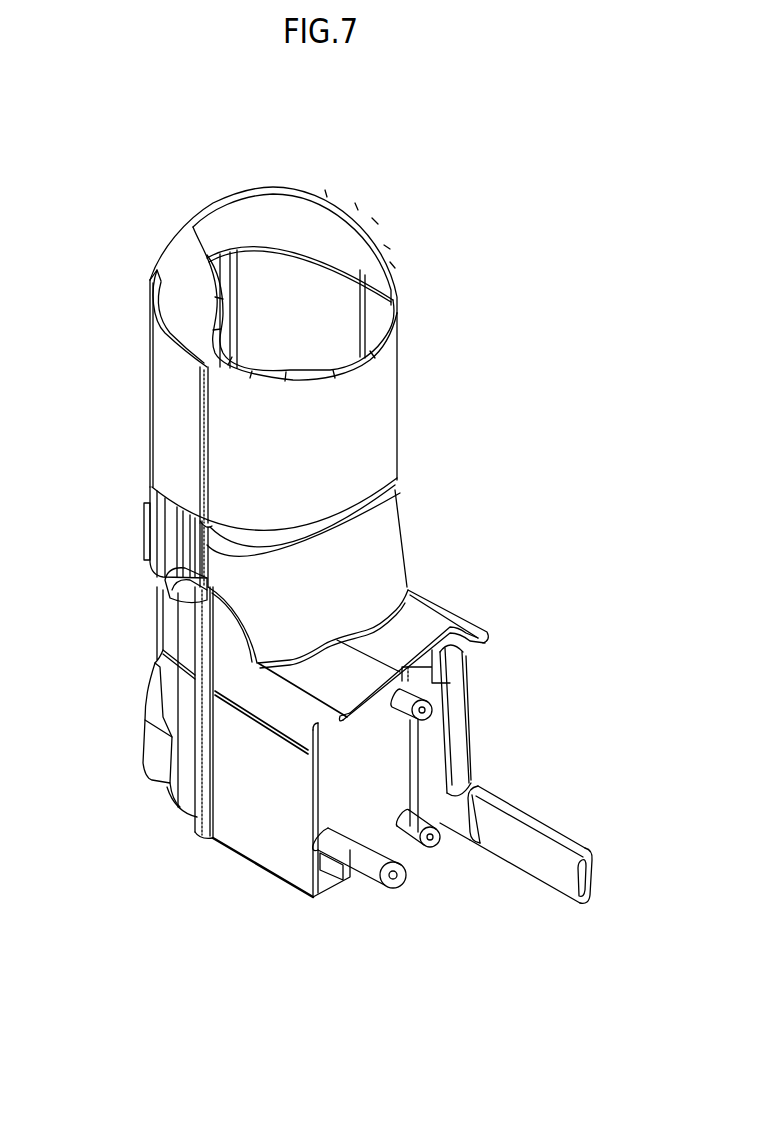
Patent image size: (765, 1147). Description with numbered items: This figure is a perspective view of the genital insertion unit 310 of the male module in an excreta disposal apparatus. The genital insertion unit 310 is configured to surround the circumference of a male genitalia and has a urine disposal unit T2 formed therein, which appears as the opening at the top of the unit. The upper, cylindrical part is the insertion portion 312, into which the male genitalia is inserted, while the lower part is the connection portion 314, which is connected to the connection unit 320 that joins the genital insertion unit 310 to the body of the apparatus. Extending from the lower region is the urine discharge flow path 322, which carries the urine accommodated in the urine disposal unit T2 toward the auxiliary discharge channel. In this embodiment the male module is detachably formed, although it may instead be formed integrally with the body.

The genital insertion unit 310 is at (478, 282).
The insertion portion 312 is at (170, 432).
The connection portion 314 is at (263, 832).
The connection unit 320 is at (367, 863).
The urine discharge flow path 322 is at (537, 823).
The urine disposal unit T2 is at (318, 316).